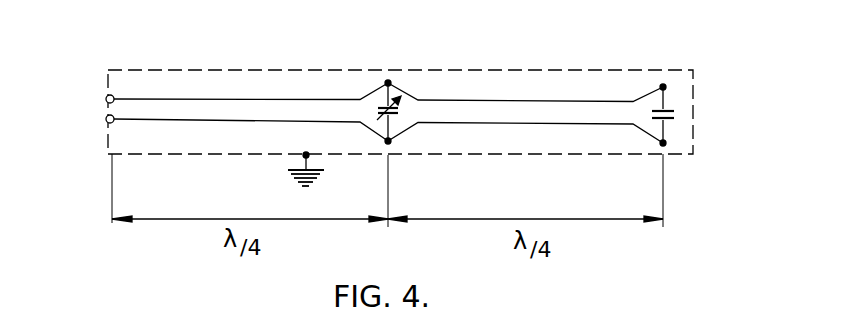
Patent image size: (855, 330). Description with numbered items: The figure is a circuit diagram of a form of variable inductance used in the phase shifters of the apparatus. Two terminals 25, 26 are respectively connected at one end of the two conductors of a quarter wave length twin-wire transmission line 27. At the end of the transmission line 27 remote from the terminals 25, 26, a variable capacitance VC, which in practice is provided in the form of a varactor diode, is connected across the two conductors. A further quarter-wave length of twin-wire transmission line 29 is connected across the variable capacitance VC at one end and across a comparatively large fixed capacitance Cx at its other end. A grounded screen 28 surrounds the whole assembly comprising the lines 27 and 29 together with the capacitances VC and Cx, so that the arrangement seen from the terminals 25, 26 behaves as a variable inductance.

The terminal 25 is at (106, 99).
The terminal 26 is at (107, 122).
The quarter wave length twin-wire transmission line 27 is at (220, 108).
The grounded screen 28 is at (284, 70).
The further quarter-wave length of twin-wire transmission line 29 is at (562, 110).
The variable capacitance VC is at (378, 102).
The fixed capacitance Cx is at (675, 109).